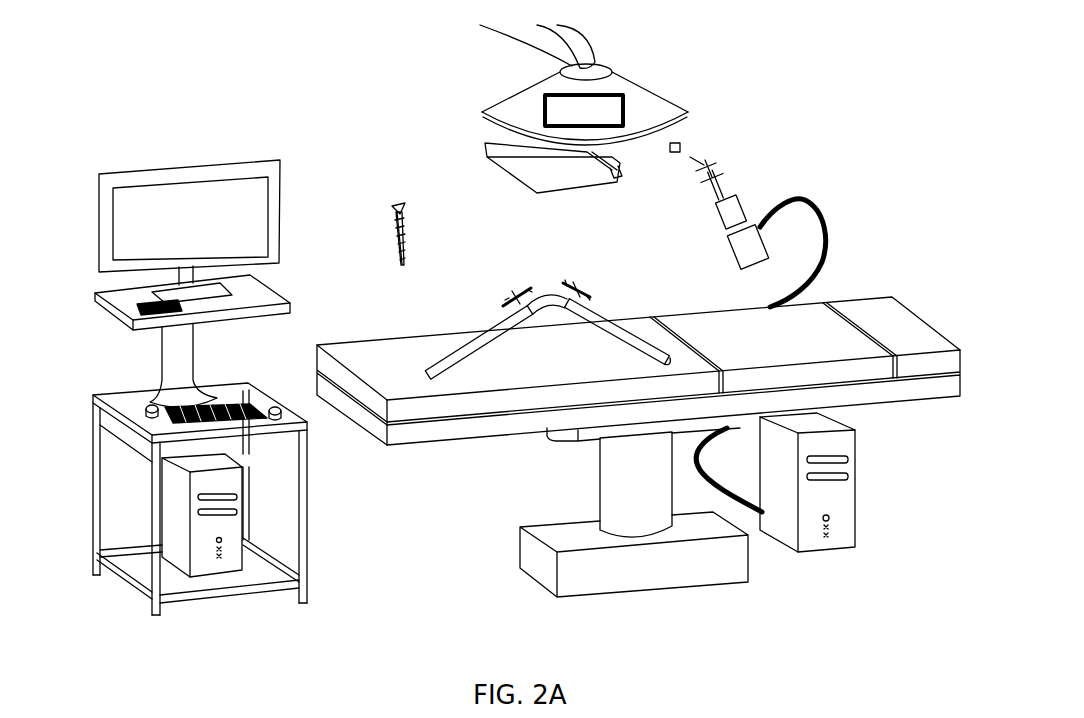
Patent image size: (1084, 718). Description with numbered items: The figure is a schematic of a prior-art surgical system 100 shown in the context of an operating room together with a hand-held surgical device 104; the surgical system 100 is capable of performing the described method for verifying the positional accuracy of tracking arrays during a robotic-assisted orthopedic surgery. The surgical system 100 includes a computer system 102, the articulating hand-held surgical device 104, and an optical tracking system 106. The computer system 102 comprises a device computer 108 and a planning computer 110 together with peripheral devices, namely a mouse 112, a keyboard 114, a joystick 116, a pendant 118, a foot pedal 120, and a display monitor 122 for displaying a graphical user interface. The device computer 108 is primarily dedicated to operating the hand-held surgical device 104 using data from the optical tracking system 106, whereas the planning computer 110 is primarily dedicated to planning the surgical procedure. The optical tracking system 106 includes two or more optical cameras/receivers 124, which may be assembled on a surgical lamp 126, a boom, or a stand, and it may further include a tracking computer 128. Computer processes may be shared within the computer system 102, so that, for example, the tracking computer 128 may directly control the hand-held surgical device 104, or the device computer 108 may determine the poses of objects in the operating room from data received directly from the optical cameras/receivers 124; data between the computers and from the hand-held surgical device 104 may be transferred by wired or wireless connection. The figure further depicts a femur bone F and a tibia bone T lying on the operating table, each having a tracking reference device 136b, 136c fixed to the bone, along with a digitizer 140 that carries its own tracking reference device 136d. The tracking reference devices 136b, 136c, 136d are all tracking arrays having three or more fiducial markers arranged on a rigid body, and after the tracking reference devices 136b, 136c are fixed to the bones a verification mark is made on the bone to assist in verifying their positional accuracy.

The surgical system 100 is at (286, 92).
The computer system 102 is at (856, 510).
The hand-held surgical device 104 is at (765, 190).
The optical tracking system 106 is at (596, 124).
The device computer 108 is at (855, 473).
The planning computer 110 is at (239, 532).
The mouse 112 is at (279, 408).
The keyboard 114 is at (232, 406).
The joystick 116 is at (147, 413).
The pendant 118 is at (140, 308).
The foot pedal 120 is at (183, 622).
The display monitor 122 is at (168, 168).
The optical cameras/receivers 124 is at (553, 183).
The surgical lamp 126 is at (492, 100).
The tracking computer 128 is at (623, 97).
The tracking reference device 136b is at (583, 293).
The tracking reference device 136c is at (510, 300).
The tracking reference device 136d is at (397, 212).
The digitizer 140 is at (399, 237).
The tibia bone T is at (487, 327).
The femur bone F is at (603, 315).